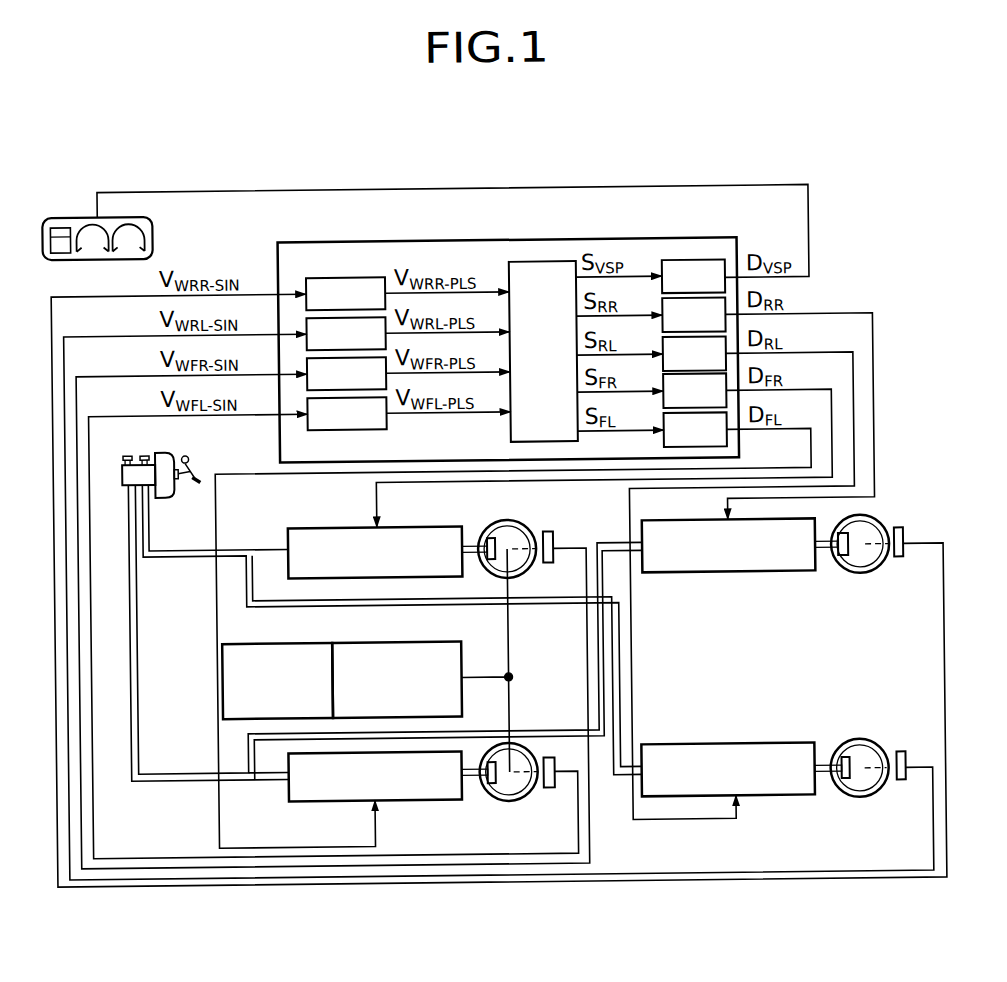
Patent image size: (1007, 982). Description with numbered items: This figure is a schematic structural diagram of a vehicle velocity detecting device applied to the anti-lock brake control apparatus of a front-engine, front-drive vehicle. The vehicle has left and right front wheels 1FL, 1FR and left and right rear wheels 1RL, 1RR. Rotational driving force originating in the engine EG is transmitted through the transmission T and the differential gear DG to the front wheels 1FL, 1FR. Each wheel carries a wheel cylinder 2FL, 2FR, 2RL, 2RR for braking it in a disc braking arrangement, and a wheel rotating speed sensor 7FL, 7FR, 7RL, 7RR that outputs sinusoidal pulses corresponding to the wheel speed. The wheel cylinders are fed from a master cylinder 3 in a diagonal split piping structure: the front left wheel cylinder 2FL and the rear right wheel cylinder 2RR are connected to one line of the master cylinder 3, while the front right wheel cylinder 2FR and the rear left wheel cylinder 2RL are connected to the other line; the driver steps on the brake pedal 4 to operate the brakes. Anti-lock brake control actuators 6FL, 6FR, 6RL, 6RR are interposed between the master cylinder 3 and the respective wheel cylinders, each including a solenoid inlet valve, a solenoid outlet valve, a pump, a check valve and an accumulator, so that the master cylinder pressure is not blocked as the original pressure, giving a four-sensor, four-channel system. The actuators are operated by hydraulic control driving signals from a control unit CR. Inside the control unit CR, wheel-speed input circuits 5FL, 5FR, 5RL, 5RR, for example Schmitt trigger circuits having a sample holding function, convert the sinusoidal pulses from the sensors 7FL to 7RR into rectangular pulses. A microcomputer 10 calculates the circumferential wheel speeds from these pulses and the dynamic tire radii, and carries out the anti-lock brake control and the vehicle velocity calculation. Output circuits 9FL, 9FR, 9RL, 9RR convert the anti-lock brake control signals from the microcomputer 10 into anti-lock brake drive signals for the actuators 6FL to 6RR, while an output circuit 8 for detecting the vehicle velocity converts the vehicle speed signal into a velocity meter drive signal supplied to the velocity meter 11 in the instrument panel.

The front right wheel 1FR is at (518, 514).
The front left wheel 1FL is at (524, 800).
The rear right wheel 1RR is at (862, 577).
The rear left wheel 1RL is at (880, 746).
The front right wheel cylinder 2FR is at (484, 532).
The front left wheel cylinder 2FL is at (488, 801).
The rear right wheel cylinder 2RR is at (846, 574).
The rear left wheel cylinder 2RL is at (841, 744).
The master cylinder 3 is at (123, 462).
The brake pedal 4 is at (197, 480).
The wheel-speed input circuit 5RR is at (345, 293).
The wheel-speed input circuit 5RL is at (345, 333).
The wheel-speed input circuit 5FR is at (346, 373).
The wheel-speed input circuit 5FL is at (346, 413).
The anti-lock brake control actuator 6FR is at (345, 526).
The anti-lock brake control actuator 6FL is at (345, 799).
The anti-lock brake control actuator 6RR is at (690, 575).
The anti-lock brake control actuator 6RL is at (672, 746).
The wheel rotating speed sensor 7FR is at (551, 532).
The wheel rotating speed sensor 7FL is at (553, 790).
The wheel rotating speed sensor 7RR is at (899, 562).
The wheel rotating speed sensor 7RL is at (899, 785).
The output circuit for detecting the vehicle velocity 8 is at (693, 276).
The output circuit for anti-lock brake control 9RR is at (693, 314).
The output circuit for anti-lock brake control 9RL is at (694, 353).
The output circuit for anti-lock brake control 9FR is at (694, 390).
The output circuit for anti-lock brake control 9FL is at (695, 429).
The microcomputer 10 is at (533, 262).
The velocity meter 11 is at (156, 233).
The control unit CR is at (655, 240).
The engine EG is at (278, 641).
The transmission T is at (420, 641).
The differential gear DG is at (508, 677).